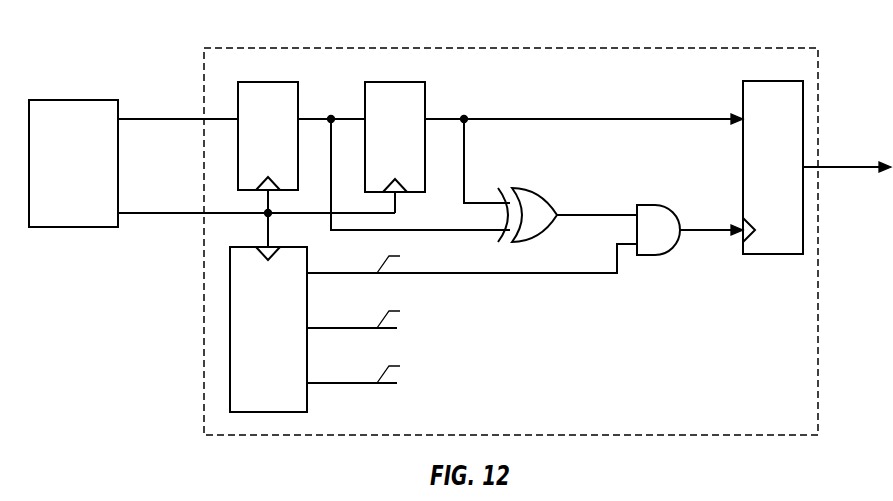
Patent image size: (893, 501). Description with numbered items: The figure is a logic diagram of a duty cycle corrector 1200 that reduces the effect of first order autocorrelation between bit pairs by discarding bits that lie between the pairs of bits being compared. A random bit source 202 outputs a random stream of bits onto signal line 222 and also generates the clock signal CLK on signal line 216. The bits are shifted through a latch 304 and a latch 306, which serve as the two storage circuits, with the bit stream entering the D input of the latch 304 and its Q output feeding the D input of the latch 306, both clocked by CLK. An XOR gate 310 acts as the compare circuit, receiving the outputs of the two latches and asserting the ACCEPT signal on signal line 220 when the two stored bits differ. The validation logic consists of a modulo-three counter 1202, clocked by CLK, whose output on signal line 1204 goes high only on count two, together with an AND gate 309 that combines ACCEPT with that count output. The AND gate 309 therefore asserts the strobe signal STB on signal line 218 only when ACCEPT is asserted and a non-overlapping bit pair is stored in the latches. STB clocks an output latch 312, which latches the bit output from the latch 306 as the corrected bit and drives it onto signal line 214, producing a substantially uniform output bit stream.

The duty cycle corrector 1200 is at (511, 226).
The random bit source 202 is at (83, 150).
The signal line 222 is at (178, 104).
The signal line 216 is at (256, 215).
The latch 304 is at (285, 122).
The latch 306 is at (412, 123).
The XOR gate 310 is at (549, 204).
The signal line 220 is at (615, 217).
The AND gate 309 is at (676, 219).
The signal line 218 is at (726, 233).
The signal line 1204 is at (592, 272).
The modulo-3 counter 1202 is at (330, 324).
The latch 312 is at (753, 154).
The signal line 214 is at (847, 155).